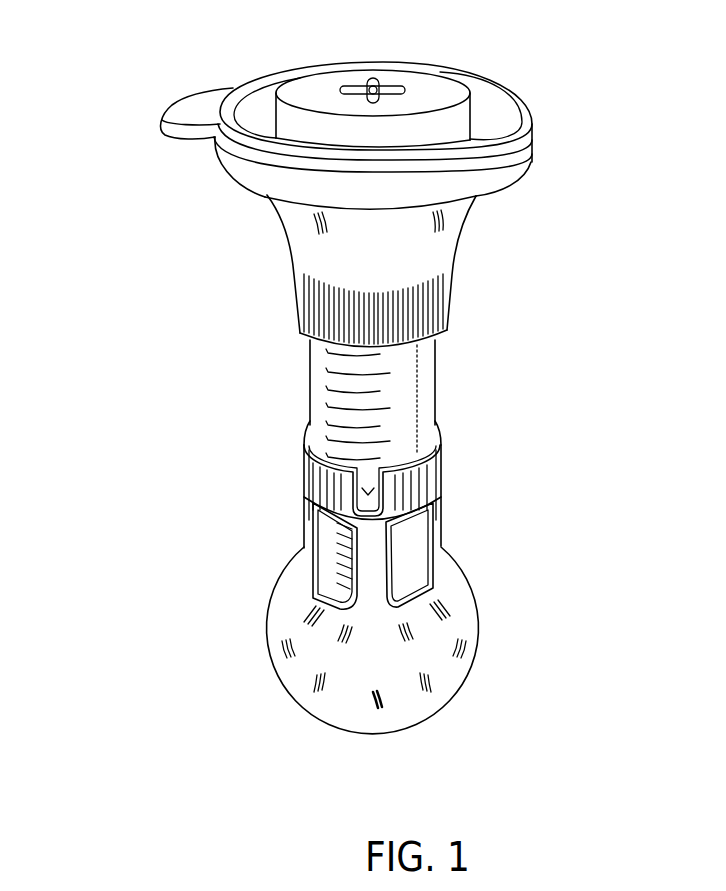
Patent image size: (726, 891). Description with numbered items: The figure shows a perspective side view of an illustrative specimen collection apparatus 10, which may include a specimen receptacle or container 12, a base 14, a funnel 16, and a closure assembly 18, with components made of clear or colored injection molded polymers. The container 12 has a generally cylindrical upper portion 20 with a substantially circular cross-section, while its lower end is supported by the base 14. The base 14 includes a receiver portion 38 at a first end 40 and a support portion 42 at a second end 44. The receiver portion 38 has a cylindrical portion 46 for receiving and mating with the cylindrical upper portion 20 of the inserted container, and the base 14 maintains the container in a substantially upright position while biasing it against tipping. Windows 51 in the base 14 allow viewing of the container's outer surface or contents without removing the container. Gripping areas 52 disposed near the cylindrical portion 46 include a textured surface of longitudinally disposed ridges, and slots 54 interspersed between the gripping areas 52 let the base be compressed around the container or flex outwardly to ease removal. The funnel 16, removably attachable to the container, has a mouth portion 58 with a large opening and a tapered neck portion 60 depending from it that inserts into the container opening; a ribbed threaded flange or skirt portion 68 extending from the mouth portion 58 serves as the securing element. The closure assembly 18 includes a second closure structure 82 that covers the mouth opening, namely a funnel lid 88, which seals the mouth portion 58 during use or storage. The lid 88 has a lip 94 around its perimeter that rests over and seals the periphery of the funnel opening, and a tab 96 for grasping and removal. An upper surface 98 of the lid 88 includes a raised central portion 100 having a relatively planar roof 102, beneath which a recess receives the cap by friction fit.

The specimen collection apparatus 10 is at (105, 247).
The container 12 is at (510, 363).
The base 14 is at (543, 563).
The funnel 16 is at (460, 218).
The closure assembly 18 is at (603, 60).
The upper portion 20 is at (310, 373).
The receiver portion 38 is at (508, 500).
The first end 40 is at (507, 448).
The support portion 42 is at (467, 612).
The second end 44 is at (515, 693).
The cylindrical portion 46 is at (250, 520).
The windows 51 is at (437, 527).
The gripping areas 52 is at (305, 483).
The slots 54 is at (390, 496).
The mouth portion 58 is at (520, 175).
The neck portion 60 is at (337, 410).
The threaded flange or skirt portion 68 is at (452, 290).
The second closure structure 82 is at (522, 117).
The funnel lid 88 is at (252, 103).
The lip 94 is at (497, 87).
The tab 96 is at (180, 107).
The upper surface 98 is at (268, 113).
The central portion 100 is at (370, 62).
The roof 102 is at (451, 98).